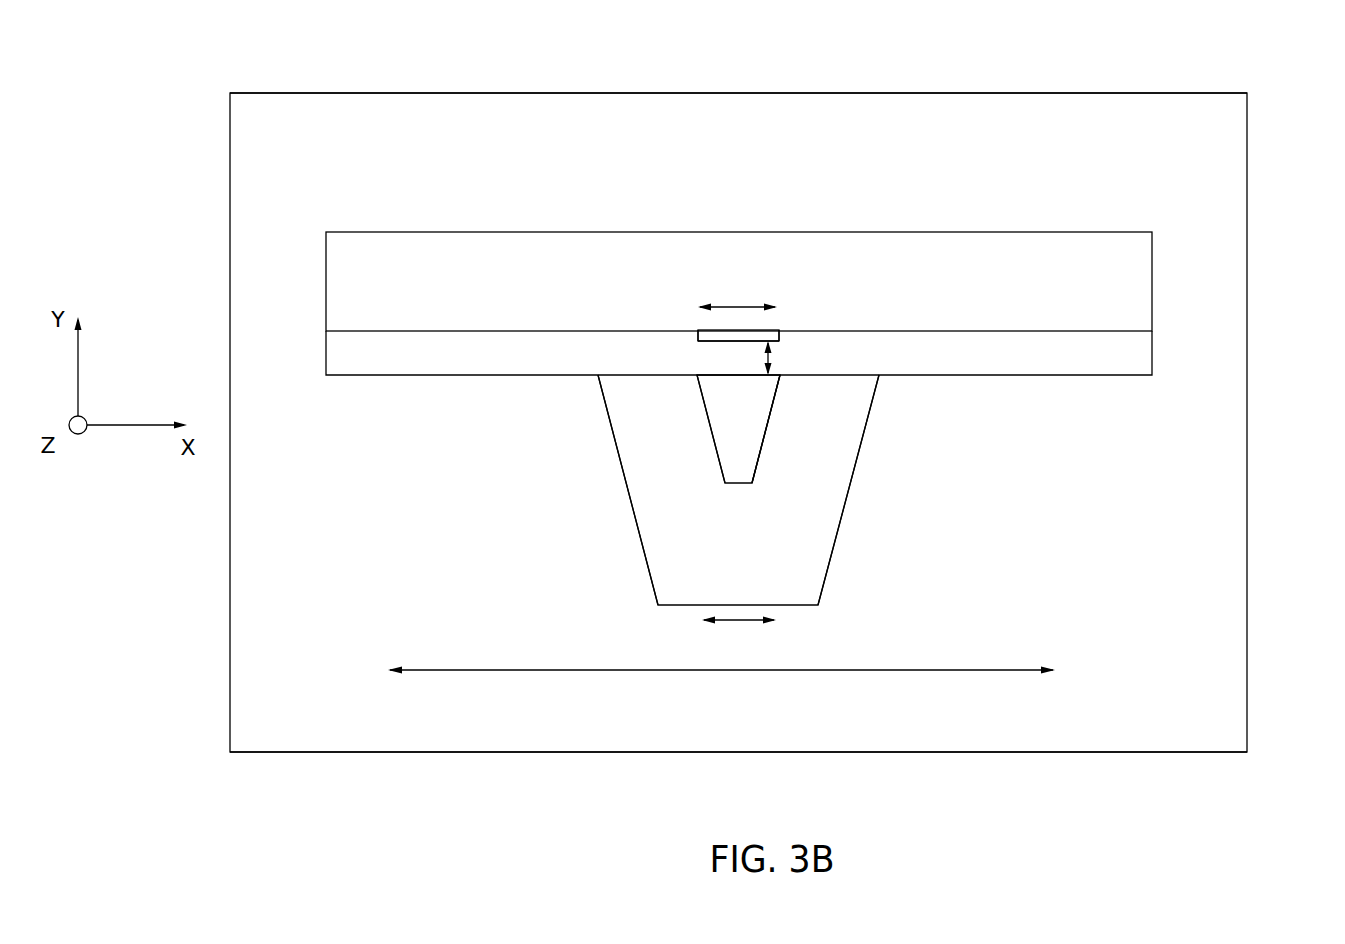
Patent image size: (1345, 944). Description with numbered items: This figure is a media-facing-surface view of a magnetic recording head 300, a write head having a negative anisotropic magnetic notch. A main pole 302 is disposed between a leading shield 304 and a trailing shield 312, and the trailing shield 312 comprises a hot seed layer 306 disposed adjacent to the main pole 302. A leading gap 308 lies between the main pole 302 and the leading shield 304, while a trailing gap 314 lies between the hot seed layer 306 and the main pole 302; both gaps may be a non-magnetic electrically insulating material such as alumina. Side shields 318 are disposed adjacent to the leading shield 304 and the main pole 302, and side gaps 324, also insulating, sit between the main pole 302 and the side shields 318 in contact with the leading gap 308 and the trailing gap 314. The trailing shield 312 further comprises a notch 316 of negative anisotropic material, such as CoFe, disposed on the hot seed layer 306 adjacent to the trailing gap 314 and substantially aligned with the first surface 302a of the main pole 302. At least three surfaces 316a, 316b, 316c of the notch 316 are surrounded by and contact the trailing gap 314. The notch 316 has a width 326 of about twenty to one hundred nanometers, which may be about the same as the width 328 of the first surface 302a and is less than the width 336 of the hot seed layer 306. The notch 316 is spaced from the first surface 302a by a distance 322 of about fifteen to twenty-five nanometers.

The magnetic recording head 300 is at (1232, 60).
The main pole 302 is at (718, 436).
The first surface of the main pole 302a is at (745, 376).
The leading shield 304 is at (719, 718).
The hot seed layer 306 is at (490, 273).
The leading gap 308 is at (718, 563).
The trailing shield 312 is at (647, 185).
The trailing gap 314 is at (490, 364).
The notch 316 is at (737, 338).
The first surface of the notch 316a is at (697, 330).
The second surface of the notch 316b is at (715, 341).
The third surface of the notch 316c is at (780, 330).
The side shields 318 is at (539, 505).
The distance 322 is at (771, 357).
The side gaps 324 is at (646, 468).
The width of the notch 326 is at (742, 305).
The width of the first surface 328 is at (738, 622).
The width of the hot seed layer 336 is at (926, 670).